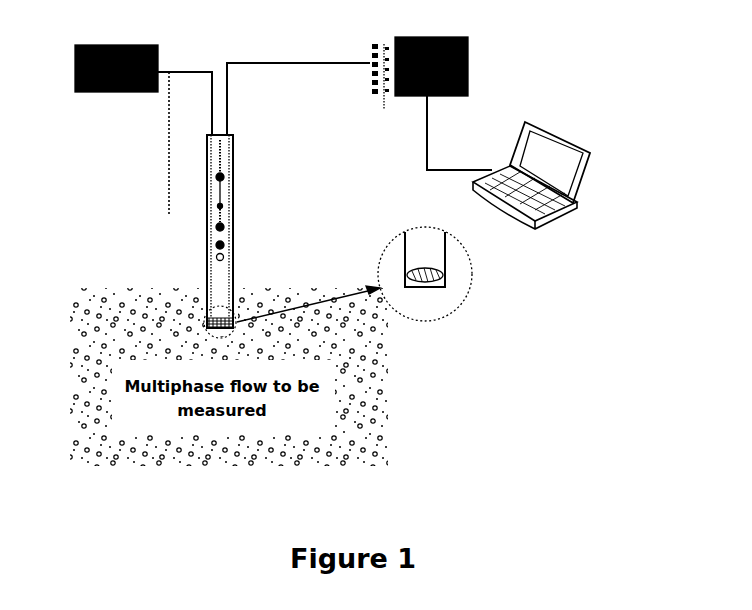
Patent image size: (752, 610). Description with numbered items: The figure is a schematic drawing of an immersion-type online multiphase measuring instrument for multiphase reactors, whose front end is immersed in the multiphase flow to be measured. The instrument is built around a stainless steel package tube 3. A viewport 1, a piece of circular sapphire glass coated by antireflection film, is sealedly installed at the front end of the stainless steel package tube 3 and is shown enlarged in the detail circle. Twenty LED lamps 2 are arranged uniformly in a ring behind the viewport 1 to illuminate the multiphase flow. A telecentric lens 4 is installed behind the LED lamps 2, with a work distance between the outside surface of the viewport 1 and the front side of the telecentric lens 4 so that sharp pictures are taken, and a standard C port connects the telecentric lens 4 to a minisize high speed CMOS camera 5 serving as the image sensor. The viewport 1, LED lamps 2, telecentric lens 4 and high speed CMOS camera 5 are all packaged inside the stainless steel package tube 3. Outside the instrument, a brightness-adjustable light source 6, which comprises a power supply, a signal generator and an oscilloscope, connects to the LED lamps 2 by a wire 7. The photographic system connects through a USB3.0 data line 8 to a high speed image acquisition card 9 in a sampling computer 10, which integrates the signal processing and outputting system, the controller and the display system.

The viewport 1 is at (425, 288).
The LED lamps 2 is at (443, 274).
The stainless steel package tube 3 is at (238, 280).
The telecentric lens 4 is at (233, 228).
The high speed CMOS camera 5 is at (226, 162).
The brightness-adjustable light source 6 is at (95, 97).
The wire 7 is at (206, 276).
The USB3.0 data line 8 is at (370, 66).
The high speed image acquisition card 9 is at (470, 64).
The sampling computer 10 is at (580, 200).